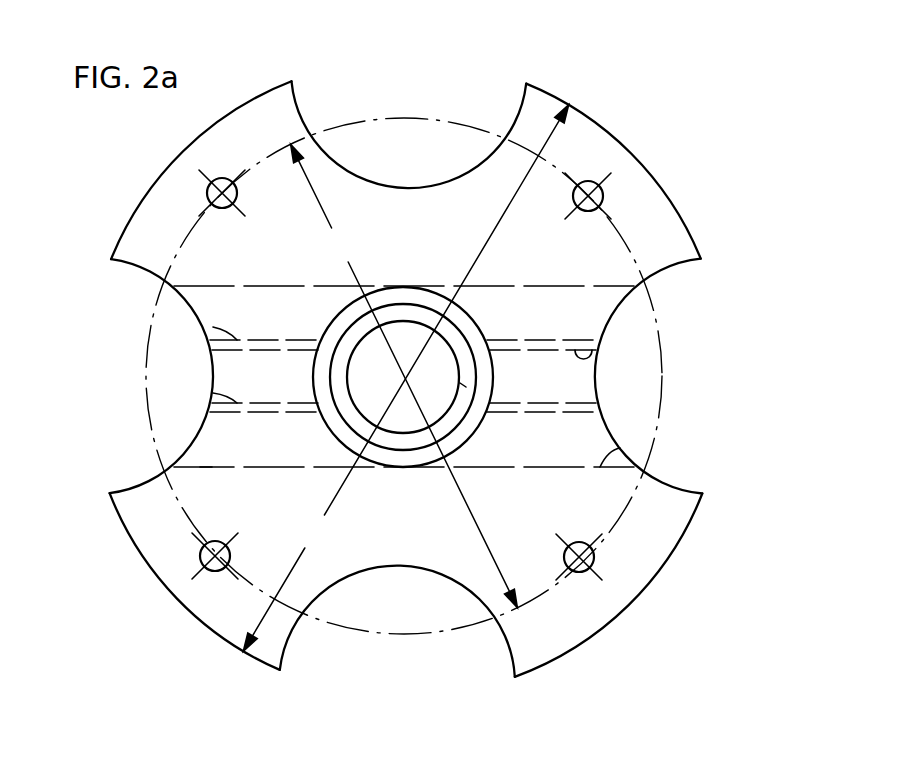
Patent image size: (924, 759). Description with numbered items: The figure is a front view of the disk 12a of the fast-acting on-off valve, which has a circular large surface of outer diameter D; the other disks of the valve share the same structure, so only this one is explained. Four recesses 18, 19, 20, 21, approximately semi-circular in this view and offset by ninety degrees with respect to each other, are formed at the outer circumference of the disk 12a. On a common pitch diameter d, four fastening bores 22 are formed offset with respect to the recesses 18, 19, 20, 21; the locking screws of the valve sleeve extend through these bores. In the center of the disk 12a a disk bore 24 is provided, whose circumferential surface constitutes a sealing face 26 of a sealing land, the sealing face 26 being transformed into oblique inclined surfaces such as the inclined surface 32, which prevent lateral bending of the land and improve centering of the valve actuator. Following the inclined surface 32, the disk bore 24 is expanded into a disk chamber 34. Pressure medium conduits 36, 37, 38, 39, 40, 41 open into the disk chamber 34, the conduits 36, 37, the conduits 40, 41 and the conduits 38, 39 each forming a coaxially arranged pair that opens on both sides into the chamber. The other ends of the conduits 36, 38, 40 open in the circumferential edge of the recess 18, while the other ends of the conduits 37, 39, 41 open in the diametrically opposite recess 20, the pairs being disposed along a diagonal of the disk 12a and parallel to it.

The disk 12a is at (619, 101).
The recess 18 is at (699, 260).
The recess 19 is at (518, 110).
The recess 20 is at (120, 260).
The recess 21 is at (500, 638).
The fastening bore 22 is at (592, 558).
The disk bore 24 is at (555, 377).
The sealing face 26 is at (457, 372).
The inclined surface 32 is at (465, 385).
The disk chamber 34 is at (473, 415).
The pressure medium conduit 36 is at (607, 358).
The pressure medium conduit 37 is at (255, 403).
The pressure medium conduit 38 is at (605, 287).
The pressure medium conduit 39 is at (255, 340).
The pressure medium conduit 40 is at (633, 450).
The pressure medium conduit 41 is at (205, 466).